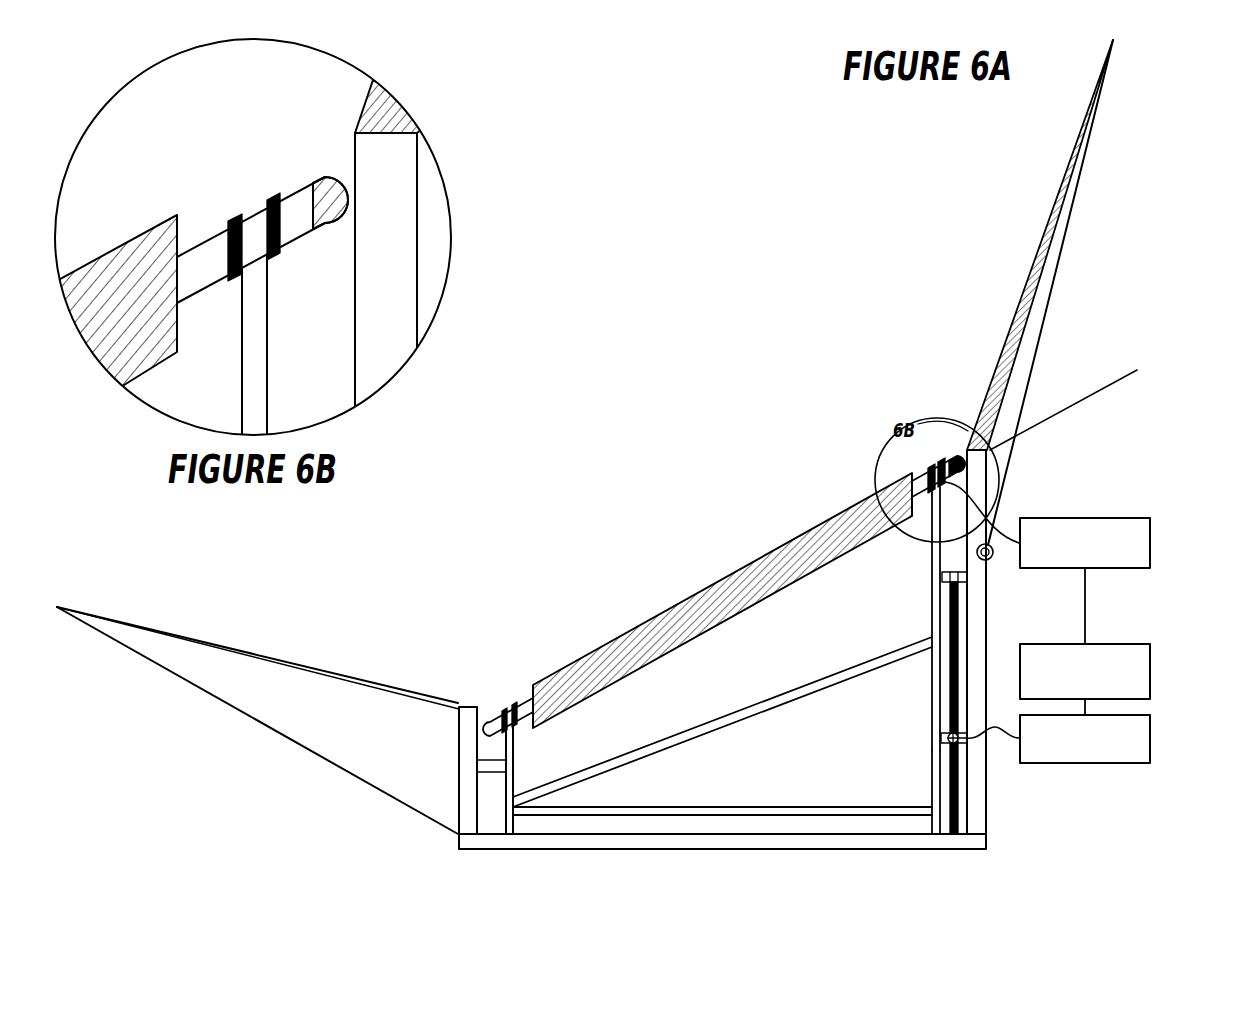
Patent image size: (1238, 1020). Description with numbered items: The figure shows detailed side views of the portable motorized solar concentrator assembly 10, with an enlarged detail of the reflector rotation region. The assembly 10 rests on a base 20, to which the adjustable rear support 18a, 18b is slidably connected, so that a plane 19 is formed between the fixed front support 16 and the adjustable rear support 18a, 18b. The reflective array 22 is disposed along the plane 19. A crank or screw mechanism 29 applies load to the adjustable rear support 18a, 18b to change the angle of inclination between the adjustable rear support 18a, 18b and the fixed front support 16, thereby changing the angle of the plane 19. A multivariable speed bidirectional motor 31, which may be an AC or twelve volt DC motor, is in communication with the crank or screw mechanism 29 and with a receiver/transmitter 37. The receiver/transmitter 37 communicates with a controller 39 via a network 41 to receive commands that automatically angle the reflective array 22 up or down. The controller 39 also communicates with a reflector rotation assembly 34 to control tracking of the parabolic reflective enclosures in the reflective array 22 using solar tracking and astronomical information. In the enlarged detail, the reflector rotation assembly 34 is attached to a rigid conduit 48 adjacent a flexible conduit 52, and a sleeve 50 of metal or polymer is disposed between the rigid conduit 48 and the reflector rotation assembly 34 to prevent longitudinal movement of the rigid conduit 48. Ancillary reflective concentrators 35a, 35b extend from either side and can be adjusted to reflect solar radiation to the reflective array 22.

In FIG. 6A, the portable motorized solar concentrator assembly 10 is at (617, 324).
In FIG. 6A, the fixed front support 16 is at (504, 790).
In FIG. 6A, the adjustable rear support 18a is at (932, 783).
In FIG. 6A, the adjustable rear support 18b is at (932, 712).
In FIG. 6A, the plane 19 is at (1093, 392).
In FIG. 6A, the base 20 is at (990, 834).
In FIG. 6A, the reflective array 22 is at (742, 566).
In FIG. 6A, the crank or screw mechanism 29 is at (947, 610).
In FIG. 6A, the multivariable speed bidirectional motor 31 is at (1152, 738).
In FIG. 6B, the reflector rotation assembly 34 is at (252, 214).
In FIG. 6A, the ancillary reflective concentrator 35a is at (1043, 232).
In FIG. 6A, the ancillary reflective concentrator 35b is at (323, 670).
In FIG. 6A, the receiver/transmitter 37 is at (1152, 671).
In FIG. 6A, the controller 39 is at (1152, 543).
In FIG. 6A, the network 41 is at (1085, 606).
In FIG. 6B, the rigid conduit 48 is at (212, 236).
In FIG. 6B, the sleeve 50 is at (233, 220).
In FIG. 6B, the flexible conduit 52 is at (330, 177).